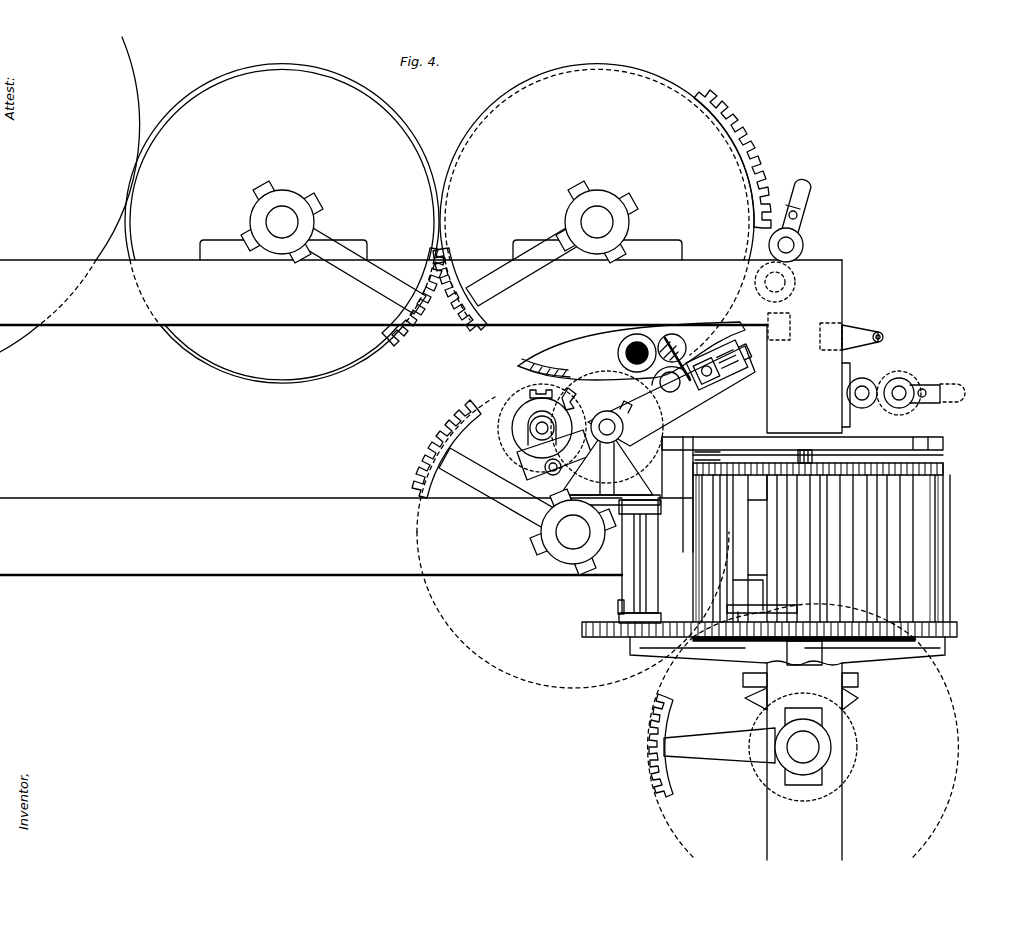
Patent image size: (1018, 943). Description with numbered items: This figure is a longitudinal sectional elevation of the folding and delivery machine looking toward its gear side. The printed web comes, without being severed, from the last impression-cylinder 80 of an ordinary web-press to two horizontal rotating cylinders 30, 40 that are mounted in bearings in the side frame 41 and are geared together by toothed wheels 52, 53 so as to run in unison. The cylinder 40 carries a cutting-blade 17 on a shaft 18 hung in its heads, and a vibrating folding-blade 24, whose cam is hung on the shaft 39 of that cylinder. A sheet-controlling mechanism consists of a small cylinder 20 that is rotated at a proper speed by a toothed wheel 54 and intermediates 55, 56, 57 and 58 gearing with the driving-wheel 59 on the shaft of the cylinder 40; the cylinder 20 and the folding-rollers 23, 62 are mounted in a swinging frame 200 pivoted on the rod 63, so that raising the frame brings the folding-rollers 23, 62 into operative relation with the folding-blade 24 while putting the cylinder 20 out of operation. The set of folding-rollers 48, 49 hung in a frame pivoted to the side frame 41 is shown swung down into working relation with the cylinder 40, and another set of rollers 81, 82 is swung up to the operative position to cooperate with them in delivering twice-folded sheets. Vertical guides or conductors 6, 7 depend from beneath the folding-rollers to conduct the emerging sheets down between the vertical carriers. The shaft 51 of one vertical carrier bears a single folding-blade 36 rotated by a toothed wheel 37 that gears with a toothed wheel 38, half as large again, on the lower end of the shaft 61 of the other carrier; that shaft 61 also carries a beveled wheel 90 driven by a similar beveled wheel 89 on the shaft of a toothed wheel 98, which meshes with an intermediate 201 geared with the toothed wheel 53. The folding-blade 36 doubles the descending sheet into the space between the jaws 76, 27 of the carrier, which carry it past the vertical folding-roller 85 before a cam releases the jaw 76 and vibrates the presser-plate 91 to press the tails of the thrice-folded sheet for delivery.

The last impression-cylinder 80 is at (70, 194).
The rotating cylinder 30 is at (282, 223).
The rotating cylinder 40 is at (597, 209).
The shaft 39 is at (597, 222).
The driving-wheel 59 is at (760, 160).
The folding-roller 49 is at (804, 246).
The folding-roller 48 is at (793, 290).
The side frame 41 is at (441, 417).
The toothed wheel 53 is at (460, 289).
The toothed wheel 52 is at (413, 301).
The cutting-blade 17 is at (598, 378).
The shaft 18 is at (652, 338).
The vibrating folding-blade 24 is at (679, 355).
The folding-roller 23 is at (671, 385).
The swinging frame 200 is at (671, 396).
The folding-roller 62 is at (730, 380).
The roller 81 is at (862, 378).
The roller 82 is at (899, 378).
The toothed wheel 54 is at (540, 389).
The intermediate 58 is at (566, 394).
The sheet-controlling cylinder 20 is at (542, 428).
The intermediate 57 is at (628, 404).
The rod 63 is at (607, 438).
The intermediate 55 is at (554, 455).
The intermediate 201 is at (446, 447).
The intermediate 56 is at (527, 511).
The shaft 51 is at (655, 548).
The folding-blade 36 is at (622, 605).
The vertical guide 6 is at (678, 470).
The vertical guide 7 is at (706, 467).
The shaft 61 is at (812, 458).
The vertical folding-roller 85 is at (950, 555).
The presser-plate 91 is at (815, 548).
The jaw 27 is at (835, 548).
The jaw 76 is at (795, 520).
The toothed wheel 37 is at (596, 638).
The toothed wheel 38 is at (866, 652).
The beveled wheel 89 is at (858, 747).
The beveled wheel 90 is at (858, 698).
The toothed wheel 98 is at (646, 745).